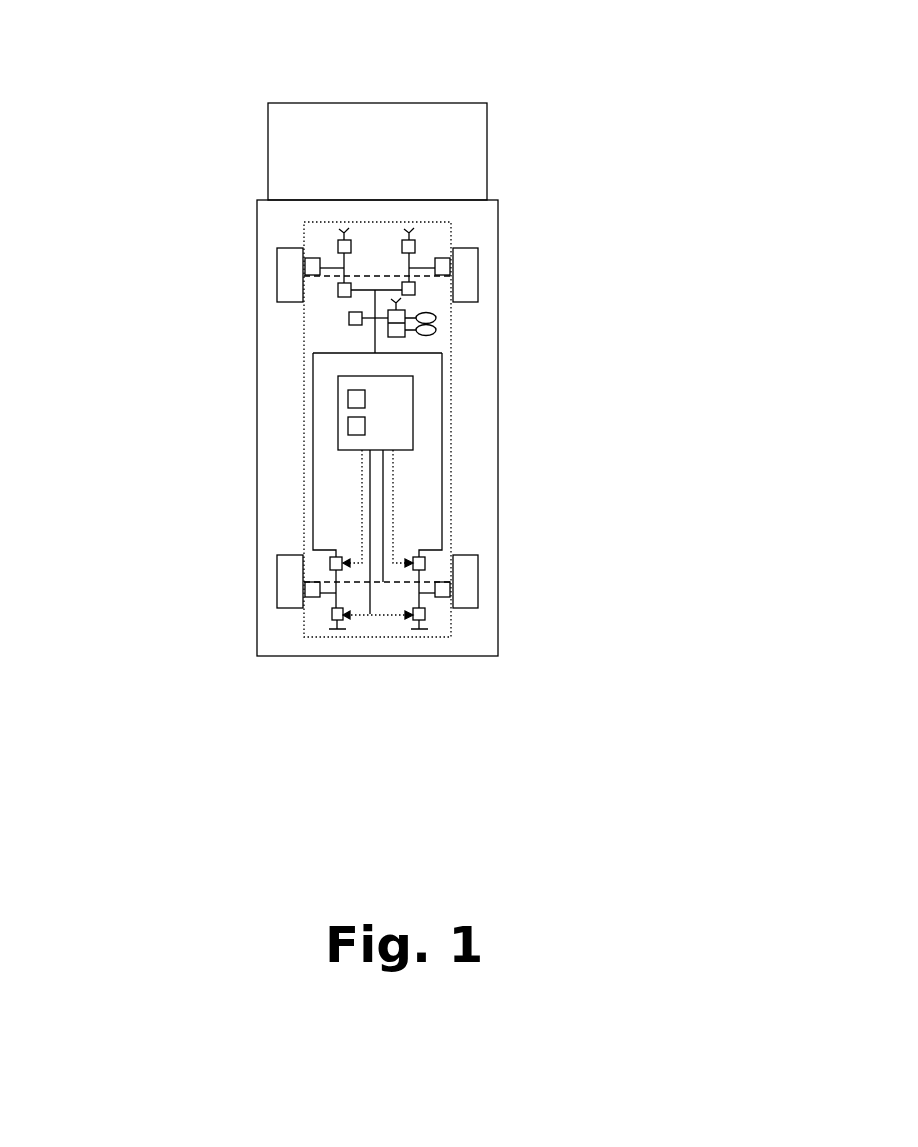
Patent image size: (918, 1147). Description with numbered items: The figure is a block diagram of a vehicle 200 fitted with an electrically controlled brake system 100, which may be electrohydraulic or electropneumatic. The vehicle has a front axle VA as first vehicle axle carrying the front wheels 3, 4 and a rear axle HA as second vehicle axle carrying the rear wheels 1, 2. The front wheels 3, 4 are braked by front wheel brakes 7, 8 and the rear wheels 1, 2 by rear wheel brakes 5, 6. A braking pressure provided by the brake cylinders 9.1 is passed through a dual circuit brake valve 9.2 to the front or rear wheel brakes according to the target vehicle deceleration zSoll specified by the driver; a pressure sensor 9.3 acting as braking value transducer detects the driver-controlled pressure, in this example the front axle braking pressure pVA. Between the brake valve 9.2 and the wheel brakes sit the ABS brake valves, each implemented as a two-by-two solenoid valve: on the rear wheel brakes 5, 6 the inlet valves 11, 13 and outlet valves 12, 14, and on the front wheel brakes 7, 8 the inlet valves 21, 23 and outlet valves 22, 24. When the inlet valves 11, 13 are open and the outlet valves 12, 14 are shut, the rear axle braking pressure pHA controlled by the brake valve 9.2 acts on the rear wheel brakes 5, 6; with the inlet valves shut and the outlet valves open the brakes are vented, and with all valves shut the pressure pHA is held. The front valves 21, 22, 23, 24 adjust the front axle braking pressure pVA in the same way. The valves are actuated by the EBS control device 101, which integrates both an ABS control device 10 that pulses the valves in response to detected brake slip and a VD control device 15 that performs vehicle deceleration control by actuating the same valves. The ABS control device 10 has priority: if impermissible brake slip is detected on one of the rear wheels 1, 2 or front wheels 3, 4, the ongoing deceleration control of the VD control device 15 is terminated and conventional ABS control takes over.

The brake system 100 is at (407, 222).
The vehicle 200 is at (343, 102).
The rear wheel 1 is at (277, 557).
The rear wheel 2 is at (478, 557).
The front wheel 3 is at (277, 248).
The front wheel 4 is at (478, 248).
The rear wheel brake 5 is at (305, 600).
The rear wheel brake 6 is at (450, 597).
The front wheel brake 7 is at (305, 268).
The front wheel brake 8 is at (450, 268).
The brake cylinders 9.1 is at (440, 325).
The dual circuit brake valve 9.2 is at (397, 337).
The pressure sensor 9.3 is at (349, 320).
The ABS control device 10 is at (348, 400).
The EBS control device 101 is at (348, 426).
The inlet valve 11 is at (330, 560).
The outlet valve 12 is at (332, 615).
The inlet valve 13 is at (425, 560).
The outlet valve 14 is at (425, 620).
The VD control device 15 is at (365, 425).
The inlet valve 21 is at (350, 283).
The outlet valve 22 is at (340, 243).
The inlet valve 23 is at (403, 241).
The outlet valve 24 is at (413, 240).
The front axle braking pressure pVA is at (500, 147).
The rear axle braking pressure pHA is at (513, 655).
The target vehicle deceleration zSoll is at (375, 320).
The front axle VA is at (420, 277).
The rear axle HA is at (383, 580).